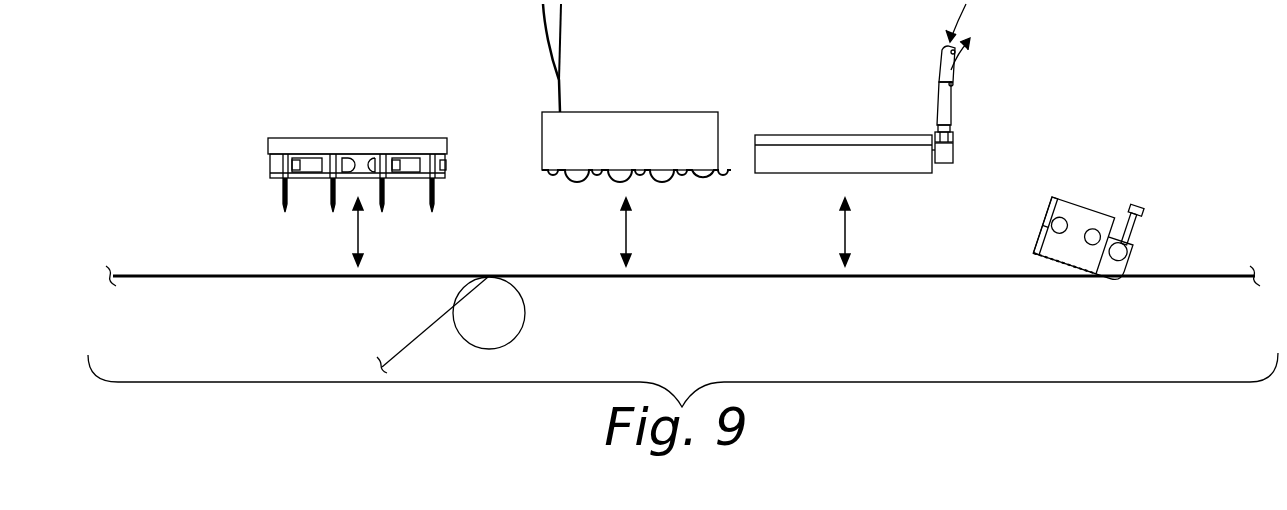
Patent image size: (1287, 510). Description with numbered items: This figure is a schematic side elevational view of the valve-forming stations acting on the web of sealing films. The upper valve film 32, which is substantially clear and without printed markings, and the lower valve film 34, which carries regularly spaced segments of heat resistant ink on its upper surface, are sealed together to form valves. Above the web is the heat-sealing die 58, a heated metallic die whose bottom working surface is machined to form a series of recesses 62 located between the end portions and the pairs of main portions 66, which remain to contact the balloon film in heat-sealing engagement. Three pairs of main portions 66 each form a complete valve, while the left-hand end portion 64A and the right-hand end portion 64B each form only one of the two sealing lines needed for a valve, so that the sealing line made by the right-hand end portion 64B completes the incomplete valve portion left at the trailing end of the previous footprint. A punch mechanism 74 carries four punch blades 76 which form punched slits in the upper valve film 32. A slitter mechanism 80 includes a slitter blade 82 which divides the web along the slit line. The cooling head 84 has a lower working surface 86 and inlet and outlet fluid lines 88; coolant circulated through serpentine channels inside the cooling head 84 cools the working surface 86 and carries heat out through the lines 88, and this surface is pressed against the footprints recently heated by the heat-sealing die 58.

The upper valve film 32 is at (187, 277).
The lower valve film 34 is at (400, 334).
The heat-sealing die 58 is at (630, 116).
The recesses 62 is at (686, 170).
The left-hand end portion 64A is at (550, 176).
The right-hand end portion 64B is at (712, 176).
The main portions 66 is at (568, 176).
The punch mechanism 74 is at (357, 162).
The punch blades 76 is at (334, 212).
The slitter mechanism 80 is at (1089, 239).
The slitter blade 82 is at (1089, 278).
The cooling head 84 is at (843, 150).
The lower working surface 86 is at (792, 162).
The inlet and outlet fluid lines 88 is at (956, 68).